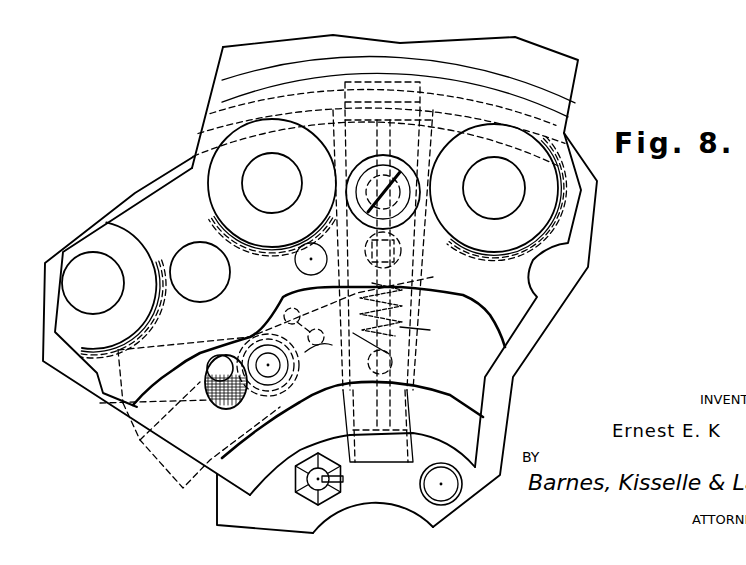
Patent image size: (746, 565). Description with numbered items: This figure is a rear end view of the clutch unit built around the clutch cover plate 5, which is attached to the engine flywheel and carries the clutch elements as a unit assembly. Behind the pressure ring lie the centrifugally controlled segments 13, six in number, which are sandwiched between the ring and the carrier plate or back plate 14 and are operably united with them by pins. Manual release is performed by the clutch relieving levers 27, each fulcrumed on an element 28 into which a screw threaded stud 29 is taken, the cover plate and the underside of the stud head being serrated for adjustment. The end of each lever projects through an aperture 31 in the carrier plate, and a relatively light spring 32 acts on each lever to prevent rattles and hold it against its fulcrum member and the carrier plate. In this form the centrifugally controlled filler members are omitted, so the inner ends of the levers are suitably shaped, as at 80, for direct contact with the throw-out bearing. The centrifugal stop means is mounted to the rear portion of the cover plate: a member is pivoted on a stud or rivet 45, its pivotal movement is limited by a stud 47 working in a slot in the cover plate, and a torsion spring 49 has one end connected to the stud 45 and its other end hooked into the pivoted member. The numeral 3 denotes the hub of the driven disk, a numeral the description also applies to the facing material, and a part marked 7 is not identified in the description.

The hub 3 is at (473, 487).
The clutch cover plate 5 is at (572, 82).
The spring seat 7 is at (387, 348).
The segments 13 is at (543, 323).
The carrier plate 14 is at (548, 118).
The clutch relieving levers 27 is at (430, 278).
The fulcrum element 28 is at (405, 170).
The screw threaded stud 29 is at (402, 218).
The aperture in carrier plate 31 is at (390, 82).
The light spring 32 is at (400, 327).
The stud or rivet 45 is at (280, 372).
The stud 47 is at (205, 378).
The torsion spring 49 is at (258, 340).
The shaped inner lever ends 80 is at (383, 453).